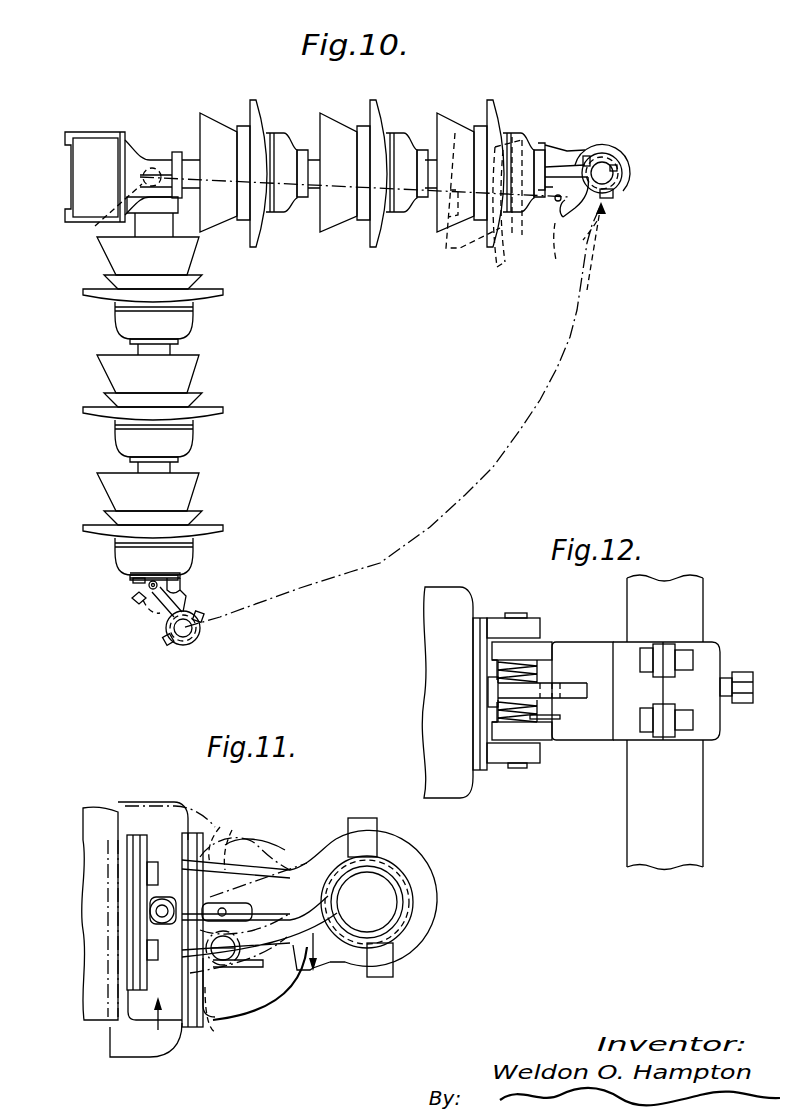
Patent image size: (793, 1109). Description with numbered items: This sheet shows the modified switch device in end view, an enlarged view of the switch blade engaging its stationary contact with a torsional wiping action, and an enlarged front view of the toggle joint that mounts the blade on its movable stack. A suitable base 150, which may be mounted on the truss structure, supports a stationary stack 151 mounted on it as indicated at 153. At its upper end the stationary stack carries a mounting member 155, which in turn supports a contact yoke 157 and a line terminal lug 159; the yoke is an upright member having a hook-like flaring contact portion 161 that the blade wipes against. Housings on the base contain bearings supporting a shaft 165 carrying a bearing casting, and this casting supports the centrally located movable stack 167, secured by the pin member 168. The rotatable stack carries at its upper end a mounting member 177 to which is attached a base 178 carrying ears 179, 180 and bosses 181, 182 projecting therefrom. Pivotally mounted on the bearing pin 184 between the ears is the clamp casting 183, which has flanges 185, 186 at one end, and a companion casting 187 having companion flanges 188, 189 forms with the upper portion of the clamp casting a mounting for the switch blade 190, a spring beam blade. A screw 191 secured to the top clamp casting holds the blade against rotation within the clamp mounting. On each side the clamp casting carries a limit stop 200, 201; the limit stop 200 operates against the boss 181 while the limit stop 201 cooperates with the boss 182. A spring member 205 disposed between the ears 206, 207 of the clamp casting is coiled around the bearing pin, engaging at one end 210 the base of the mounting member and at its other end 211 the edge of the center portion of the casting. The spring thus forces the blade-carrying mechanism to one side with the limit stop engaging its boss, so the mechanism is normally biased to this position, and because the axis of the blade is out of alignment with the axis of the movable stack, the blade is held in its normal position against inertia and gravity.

In FIG. 10, the base 150 is at (88, 147).
In FIG. 10, the stationary stack 151 is at (290, 135).
In FIG. 11, the stationary stack 151 is at (88, 815).
In FIG. 10, the stack mounting 153 is at (150, 160).
In FIG. 11, the mounting member 155 is at (140, 835).
In FIG. 10, the contact yoke 157 is at (562, 157).
In FIG. 11, the contact yoke 157 is at (175, 857).
In FIG. 11, the line terminal lug 159 is at (150, 909).
In FIG. 10, the contact portion 161 is at (628, 158).
In FIG. 11, the contact portion 161 is at (432, 888).
In FIG. 10, the shaft 165 is at (99, 212).
In FIG. 10, the movable stack 167 is at (195, 367).
In FIG. 10, the pin member 168 is at (160, 223).
In FIG. 10, the mounting member 177 is at (532, 227).
In FIG. 12, the mounting member 177 is at (448, 598).
In FIG. 11, the mounting member 177 is at (137, 1045).
In FIG. 10, the base 178 is at (180, 576).
In FIG. 12, the base 178 is at (483, 772).
In FIG. 11, the base 178 is at (187, 1027).
In FIG. 10, the ear 179 is at (150, 586).
In FIG. 12, the ear 179 is at (533, 626).
In FIG. 12, the ear 180 is at (537, 753).
In FIG. 10, the boss 181 is at (555, 223).
In FIG. 12, the boss 181 is at (492, 692).
In FIG. 11, the boss 181 is at (213, 1033).
In FIG. 10, the boss 182 is at (180, 583).
In FIG. 11, the boss 182 is at (225, 835).
In FIG. 10, the clamp casting 183 is at (612, 200).
In FIG. 12, the clamp casting 183 is at (580, 647).
In FIG. 11, the clamp casting 183 is at (302, 960).
In FIG. 10, the bearing pin 184 is at (135, 598).
In FIG. 12, the bearing pin 184 is at (525, 768).
In FIG. 11, the bearing pin 184 is at (247, 960).
In FIG. 12, the flange 185 is at (650, 670).
In FIG. 12, the flange 186 is at (660, 735).
In FIG. 10, the companion casting 187 is at (605, 153).
In FIG. 12, the companion casting 187 is at (707, 647).
In FIG. 12, the companion flange 188 is at (673, 670).
In FIG. 12, the companion flange 189 is at (673, 735).
In FIG. 10, the switch blade 190 is at (615, 160).
In FIG. 12, the switch blade 190 is at (683, 602).
In FIG. 11, the switch blade 190 is at (402, 927).
In FIG. 12, the screw 191 is at (743, 703).
In FIG. 10, the limit stop 200 is at (597, 223).
In FIG. 12, the limit stop 200 is at (570, 698).
In FIG. 11, the limit stop 200 is at (258, 1007).
In FIG. 10, the limit stop 201 is at (184, 595).
In FIG. 11, the limit stop 201 is at (263, 853).
In FIG. 12, the spring member 205 is at (537, 672).
In FIG. 12, the ear 206 is at (498, 645).
In FIG. 12, the ear 207 is at (498, 733).
In FIG. 12, the spring end 210 is at (493, 657).
In FIG. 12, the spring end 211 is at (560, 719).